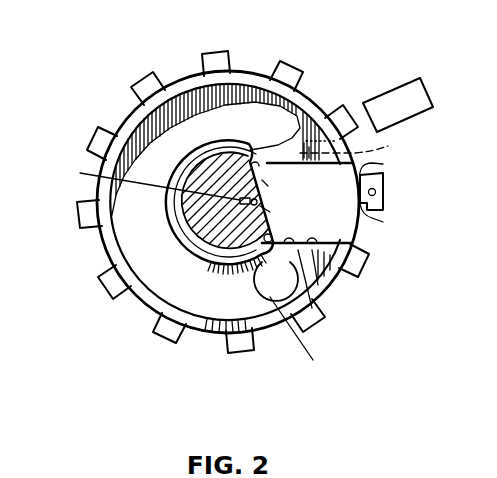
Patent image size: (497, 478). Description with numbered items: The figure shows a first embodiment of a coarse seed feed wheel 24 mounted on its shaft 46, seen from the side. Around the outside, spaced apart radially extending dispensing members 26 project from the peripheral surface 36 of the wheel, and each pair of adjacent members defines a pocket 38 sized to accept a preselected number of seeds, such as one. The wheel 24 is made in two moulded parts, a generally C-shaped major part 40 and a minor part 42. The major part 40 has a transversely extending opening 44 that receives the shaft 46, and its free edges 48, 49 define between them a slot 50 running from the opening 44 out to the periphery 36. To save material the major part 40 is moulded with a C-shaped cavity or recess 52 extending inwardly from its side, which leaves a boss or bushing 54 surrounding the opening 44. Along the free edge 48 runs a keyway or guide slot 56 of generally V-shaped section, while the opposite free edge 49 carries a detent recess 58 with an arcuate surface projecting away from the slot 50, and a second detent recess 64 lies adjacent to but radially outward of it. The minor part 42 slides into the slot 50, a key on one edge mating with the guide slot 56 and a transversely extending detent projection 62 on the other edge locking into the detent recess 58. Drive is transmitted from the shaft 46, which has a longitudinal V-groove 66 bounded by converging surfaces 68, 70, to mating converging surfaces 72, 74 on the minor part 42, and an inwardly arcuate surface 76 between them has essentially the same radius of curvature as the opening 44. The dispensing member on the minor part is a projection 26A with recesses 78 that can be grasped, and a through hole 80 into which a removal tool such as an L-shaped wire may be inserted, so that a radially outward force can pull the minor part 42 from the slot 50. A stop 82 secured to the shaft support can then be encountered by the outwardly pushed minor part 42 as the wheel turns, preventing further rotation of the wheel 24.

The feed wheel 24 is at (199, 341).
The dispensing members 26 is at (233, 356).
The projection 26A is at (385, 205).
The peripheral surface 36 is at (336, 278).
The pocket 38 is at (280, 356).
The major part 40 is at (303, 110).
The minor part 42 is at (348, 237).
The opening 44 is at (222, 186).
The shaft 46 is at (217, 172).
The free edge 48 is at (250, 146).
The free edge 49 is at (303, 337).
The slot 50 is at (263, 168).
The cavity or recess 52 is at (203, 129).
The boss or bushing 54 is at (227, 140).
The keyway, guide slot or groove 56 is at (355, 145).
The detent recess 58 is at (276, 281).
The detent projection 62 is at (291, 242).
The second detent recess 64 is at (322, 288).
The V-groove 66 is at (146, 182).
The converging surface 68 is at (268, 186).
The converging surface 70 is at (270, 212).
The converging surface 72 is at (262, 168).
The converging surface 74 is at (270, 237).
The inwardly arcuate surface 76 is at (258, 202).
The recesses 78 is at (383, 164).
The through hole 80 is at (384, 190).
The stop 82 is at (384, 95).